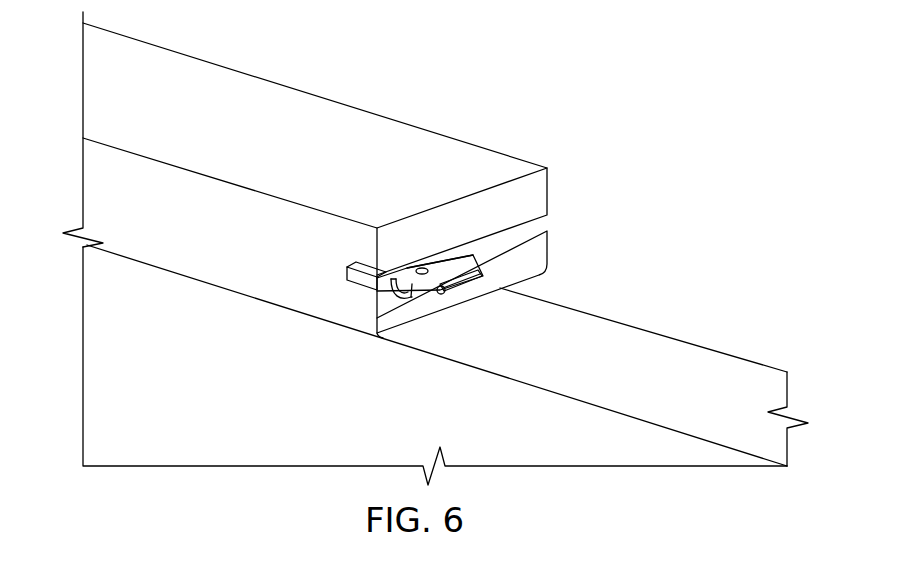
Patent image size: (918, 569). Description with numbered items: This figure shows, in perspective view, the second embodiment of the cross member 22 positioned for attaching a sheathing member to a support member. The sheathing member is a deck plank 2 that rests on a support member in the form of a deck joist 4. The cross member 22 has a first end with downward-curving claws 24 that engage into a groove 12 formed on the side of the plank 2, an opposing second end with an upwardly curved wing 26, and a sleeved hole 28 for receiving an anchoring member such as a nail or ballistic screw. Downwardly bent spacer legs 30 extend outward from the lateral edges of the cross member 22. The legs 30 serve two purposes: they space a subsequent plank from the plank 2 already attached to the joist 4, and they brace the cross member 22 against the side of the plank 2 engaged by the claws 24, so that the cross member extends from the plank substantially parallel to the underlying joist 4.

The sheathing member 2 is at (212, 242).
The support member 4 is at (343, 424).
The groove 12 is at (547, 216).
The cross member 22 is at (480, 266).
The downward-curving claws 24 is at (368, 274).
The upwardly curved wing 26 is at (468, 292).
The sleeved hole 28 is at (424, 268).
The spacer legs 30 is at (390, 291).